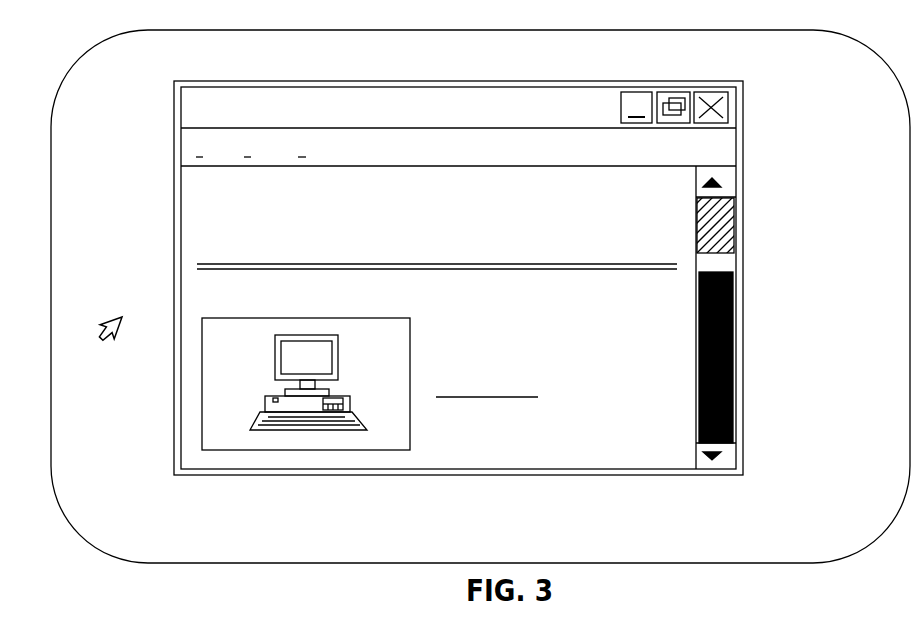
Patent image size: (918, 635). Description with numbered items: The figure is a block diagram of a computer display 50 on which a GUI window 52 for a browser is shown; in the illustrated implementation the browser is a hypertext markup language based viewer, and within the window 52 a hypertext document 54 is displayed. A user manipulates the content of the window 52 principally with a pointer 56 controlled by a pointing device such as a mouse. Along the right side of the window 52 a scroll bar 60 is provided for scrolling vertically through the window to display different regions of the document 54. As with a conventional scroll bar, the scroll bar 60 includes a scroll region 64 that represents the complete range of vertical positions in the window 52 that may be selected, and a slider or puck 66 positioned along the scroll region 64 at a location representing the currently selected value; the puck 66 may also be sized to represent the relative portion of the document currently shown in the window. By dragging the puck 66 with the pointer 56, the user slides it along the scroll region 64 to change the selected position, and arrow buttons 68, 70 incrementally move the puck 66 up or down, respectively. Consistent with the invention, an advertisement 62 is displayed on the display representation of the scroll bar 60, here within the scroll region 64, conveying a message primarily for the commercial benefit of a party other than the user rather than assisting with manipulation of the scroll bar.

The computer display 50 is at (124, 558).
The GUI window 52 is at (396, 102).
The hypertext document 54 is at (498, 458).
The pointer 56 is at (108, 319).
The scroll bar 60 is at (721, 332).
The advertisement 62 is at (732, 342).
The scroll region 64 is at (710, 258).
The puck 66 is at (698, 228).
The arrow button 68 is at (724, 178).
The arrow button 70 is at (727, 462).